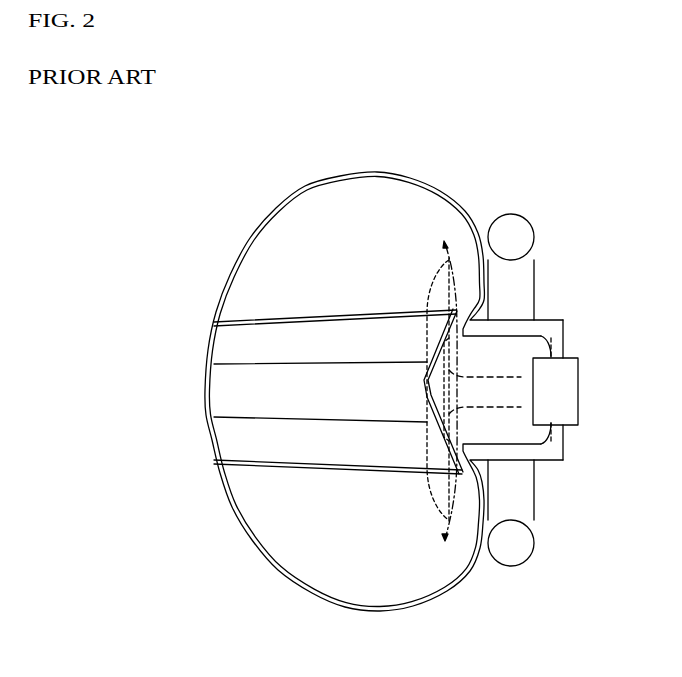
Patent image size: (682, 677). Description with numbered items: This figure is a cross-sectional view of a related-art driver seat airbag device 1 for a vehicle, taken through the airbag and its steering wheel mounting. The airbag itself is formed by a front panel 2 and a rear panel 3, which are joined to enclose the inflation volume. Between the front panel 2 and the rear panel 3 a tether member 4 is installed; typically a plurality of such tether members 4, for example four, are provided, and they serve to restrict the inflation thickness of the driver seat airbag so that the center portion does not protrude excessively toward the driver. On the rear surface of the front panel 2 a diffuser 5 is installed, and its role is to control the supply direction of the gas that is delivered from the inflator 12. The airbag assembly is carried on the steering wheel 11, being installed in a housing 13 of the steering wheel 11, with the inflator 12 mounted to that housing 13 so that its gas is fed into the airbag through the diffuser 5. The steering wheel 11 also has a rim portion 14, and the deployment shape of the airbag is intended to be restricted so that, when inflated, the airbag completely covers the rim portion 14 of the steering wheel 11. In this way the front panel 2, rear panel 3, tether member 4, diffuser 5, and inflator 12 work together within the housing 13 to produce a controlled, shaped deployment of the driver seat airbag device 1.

The driver seat airbag device 1 is at (313, 178).
The front panel 2 is at (399, 176).
The rear panel 3 is at (280, 206).
The tether member 4 is at (267, 323).
The diffuser 5 is at (430, 470).
The steering wheel 11 is at (521, 209).
The inflator 12 is at (578, 393).
The housing 13 is at (566, 332).
The rim portion 14 is at (526, 226).